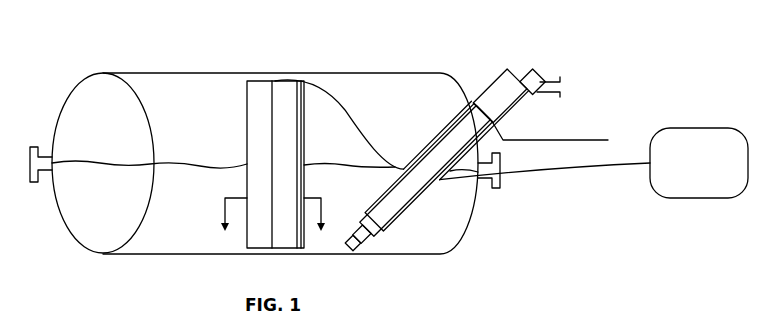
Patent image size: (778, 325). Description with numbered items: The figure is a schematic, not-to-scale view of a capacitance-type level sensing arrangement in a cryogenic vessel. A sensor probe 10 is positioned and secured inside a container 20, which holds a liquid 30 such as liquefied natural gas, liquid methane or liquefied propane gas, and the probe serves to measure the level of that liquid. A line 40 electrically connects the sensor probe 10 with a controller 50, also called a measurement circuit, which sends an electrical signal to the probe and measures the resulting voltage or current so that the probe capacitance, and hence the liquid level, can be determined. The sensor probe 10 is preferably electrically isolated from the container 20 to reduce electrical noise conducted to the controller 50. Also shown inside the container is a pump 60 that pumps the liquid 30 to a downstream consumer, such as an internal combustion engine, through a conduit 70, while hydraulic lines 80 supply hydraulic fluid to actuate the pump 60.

The sensor probe 10 is at (243, 129).
The container 20 is at (181, 73).
The liquid 30 is at (193, 218).
The line 40 is at (361, 136).
The controller 50 is at (699, 128).
The pump 60 is at (479, 85).
The conduit 70 is at (608, 140).
The hydraulic lines 80 is at (547, 70).